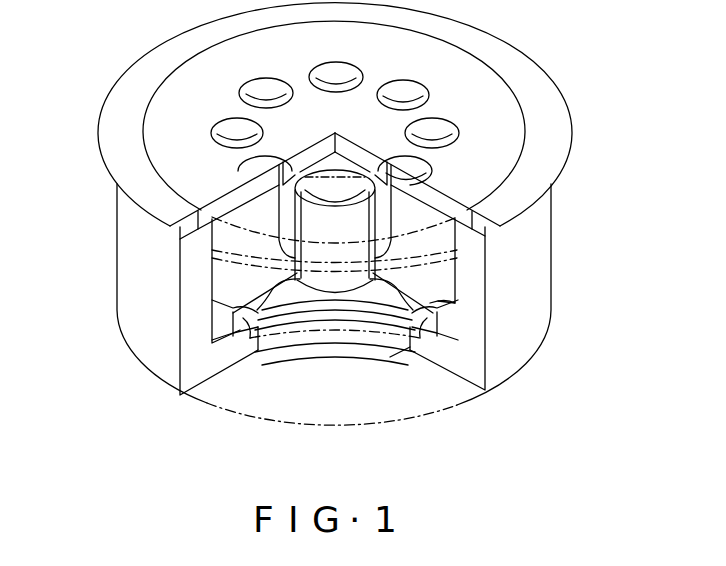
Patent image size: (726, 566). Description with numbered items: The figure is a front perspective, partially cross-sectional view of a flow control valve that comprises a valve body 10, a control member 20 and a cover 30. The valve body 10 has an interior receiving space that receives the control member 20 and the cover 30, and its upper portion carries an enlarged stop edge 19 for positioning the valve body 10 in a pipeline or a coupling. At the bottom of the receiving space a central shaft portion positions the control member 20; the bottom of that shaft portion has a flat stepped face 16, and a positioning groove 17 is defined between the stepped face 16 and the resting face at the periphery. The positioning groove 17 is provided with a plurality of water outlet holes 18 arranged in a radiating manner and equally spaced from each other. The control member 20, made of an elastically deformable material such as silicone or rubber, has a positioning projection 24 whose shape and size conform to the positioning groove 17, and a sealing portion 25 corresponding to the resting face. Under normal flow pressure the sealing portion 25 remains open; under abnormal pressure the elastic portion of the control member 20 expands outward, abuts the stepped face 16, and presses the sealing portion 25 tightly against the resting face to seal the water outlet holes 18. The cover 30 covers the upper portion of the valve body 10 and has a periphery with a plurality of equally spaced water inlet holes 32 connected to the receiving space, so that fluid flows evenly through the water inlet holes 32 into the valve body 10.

The valve body 10 is at (130, 257).
The stepped face 16 is at (303, 300).
The positioning groove 17 is at (423, 340).
The water outlet holes 18 is at (437, 327).
The enlarged stop edge 19 is at (545, 97).
The control member 20 is at (440, 268).
The positioning projection 24 is at (405, 300).
The sealing portion 25 is at (430, 303).
The cover 30 is at (207, 83).
The water inlet holes 32 is at (410, 97).